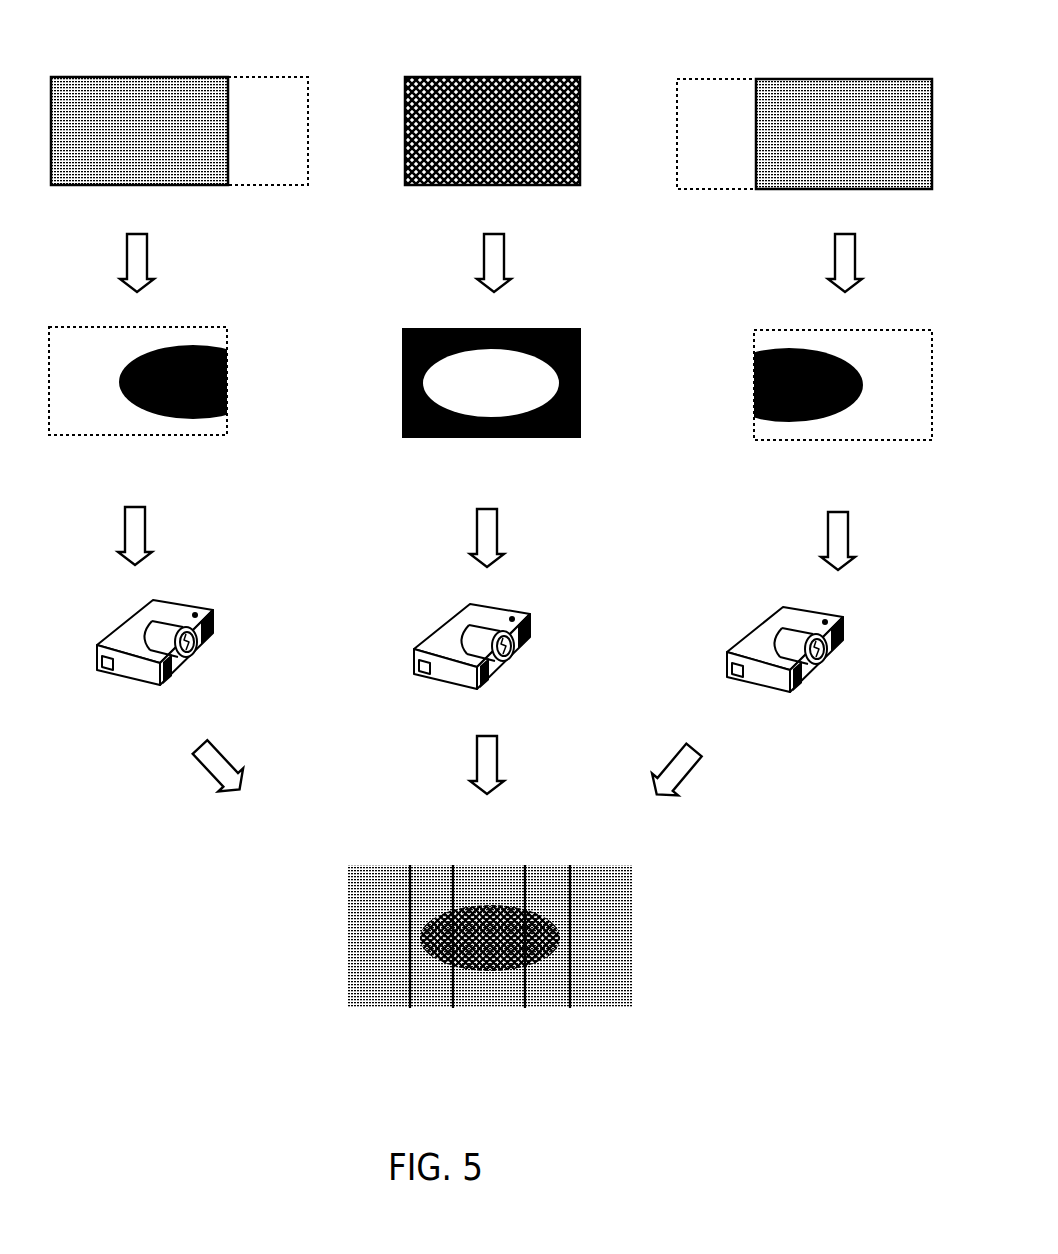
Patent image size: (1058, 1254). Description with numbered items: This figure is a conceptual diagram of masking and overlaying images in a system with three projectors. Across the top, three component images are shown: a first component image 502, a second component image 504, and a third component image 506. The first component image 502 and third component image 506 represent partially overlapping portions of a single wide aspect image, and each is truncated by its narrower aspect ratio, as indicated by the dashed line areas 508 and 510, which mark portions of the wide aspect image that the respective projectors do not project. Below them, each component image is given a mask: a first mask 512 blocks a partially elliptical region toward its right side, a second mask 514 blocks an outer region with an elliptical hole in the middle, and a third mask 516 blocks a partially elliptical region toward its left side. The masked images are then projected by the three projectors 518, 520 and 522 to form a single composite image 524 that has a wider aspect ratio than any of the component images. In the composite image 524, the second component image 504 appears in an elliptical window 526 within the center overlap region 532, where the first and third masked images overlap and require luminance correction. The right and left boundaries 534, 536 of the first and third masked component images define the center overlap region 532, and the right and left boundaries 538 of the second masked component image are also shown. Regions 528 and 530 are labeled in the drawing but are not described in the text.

The first component image 502 is at (122, 93).
The second component image 504 is at (455, 95).
The third component image 506 is at (898, 100).
The dashed line area 508 is at (282, 95).
The dashed line area 510 is at (730, 110).
The first mask 512 is at (204, 318).
The second mask 514 is at (549, 318).
The third mask 516 is at (787, 318).
The projector 518 is at (173, 615).
The projector 520 is at (492, 618).
The projector 522 is at (788, 618).
The composite image 524 is at (481, 951).
The elliptical window 526 is at (488, 922).
The left image region 528 is at (378, 975).
The right image region 530 is at (608, 937).
The center overlap region 532 is at (493, 993).
The right boundary 534 is at (525, 887).
The left boundary 536 is at (452, 893).
The right and left boundaries 538 is at (410, 987).